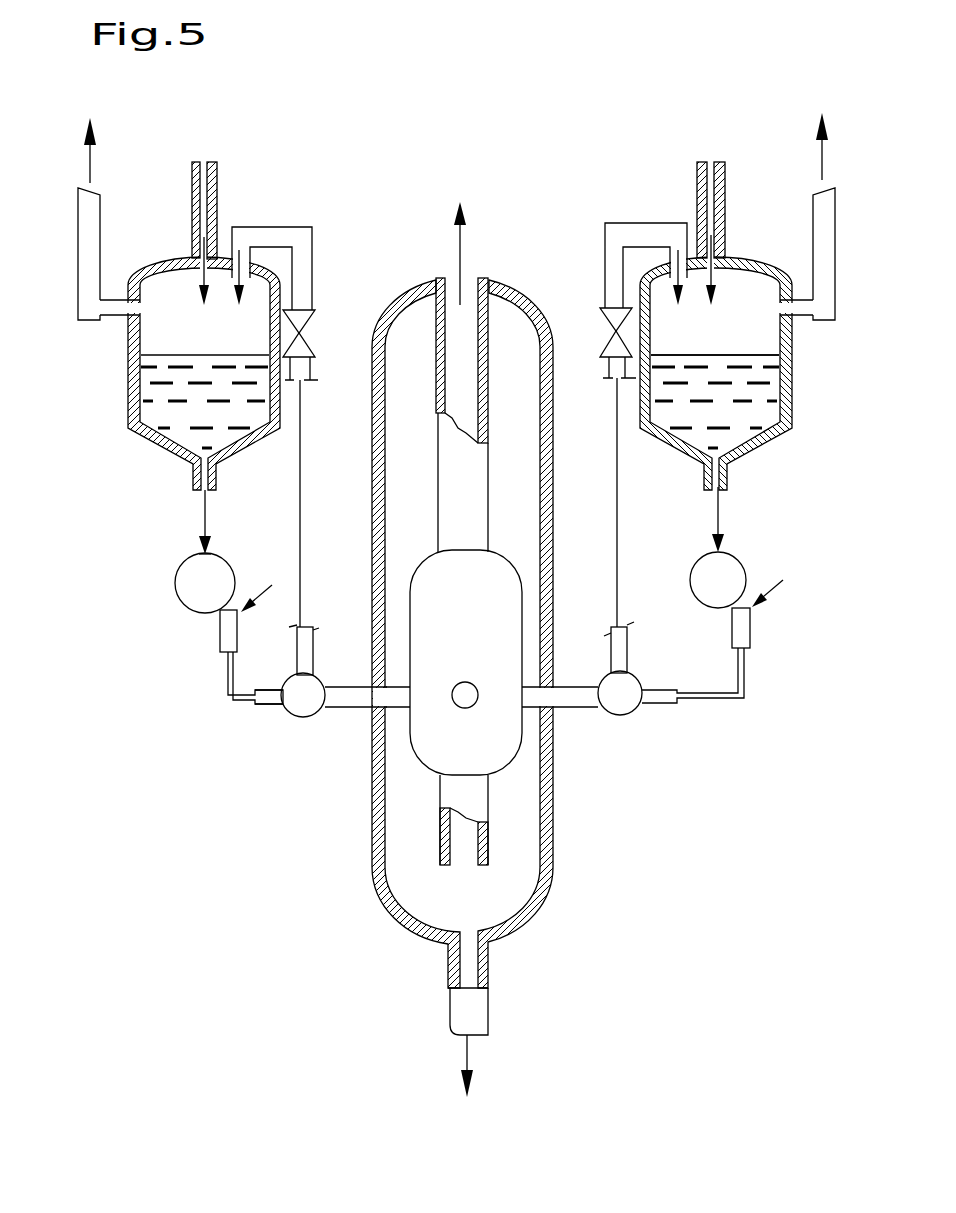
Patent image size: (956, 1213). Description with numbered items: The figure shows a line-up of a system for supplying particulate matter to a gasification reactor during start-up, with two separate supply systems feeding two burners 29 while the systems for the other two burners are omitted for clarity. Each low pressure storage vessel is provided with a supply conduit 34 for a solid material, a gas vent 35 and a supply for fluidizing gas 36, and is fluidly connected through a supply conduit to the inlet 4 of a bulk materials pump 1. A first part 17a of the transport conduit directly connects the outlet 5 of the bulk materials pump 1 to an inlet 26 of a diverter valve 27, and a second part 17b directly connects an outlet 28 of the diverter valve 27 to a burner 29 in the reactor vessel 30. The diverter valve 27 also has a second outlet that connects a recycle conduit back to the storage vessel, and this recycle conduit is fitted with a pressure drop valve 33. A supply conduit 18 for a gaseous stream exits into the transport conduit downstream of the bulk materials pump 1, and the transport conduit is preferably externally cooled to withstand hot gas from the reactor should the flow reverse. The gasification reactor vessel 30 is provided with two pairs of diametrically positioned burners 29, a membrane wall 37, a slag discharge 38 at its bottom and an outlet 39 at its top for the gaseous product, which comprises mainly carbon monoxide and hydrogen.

The bulk materials pump 1 is at (197, 602).
The inlet 4 is at (208, 558).
The outlet 5 is at (228, 632).
The first part of transport conduit 17a is at (267, 703).
The second part of transport conduit 17b is at (347, 700).
The supply conduit for a gaseous stream 18 is at (262, 592).
The inlet of diverter valve 26 is at (280, 713).
The diverter valve 27 is at (302, 718).
The outlet of diverter valve 28 is at (330, 693).
The burner 29 is at (383, 693).
The reactor vessel 30 is at (554, 492).
The pressure drop valve 33 is at (310, 324).
The supply conduit for a solid material 34 is at (220, 182).
The gas vent 35 is at (75, 207).
The supply for fluidizing gas 36 is at (140, 447).
The membrane wall 37 is at (435, 580).
The slag discharge 38 is at (468, 1052).
The outlet for the gaseous product 39 is at (463, 257).